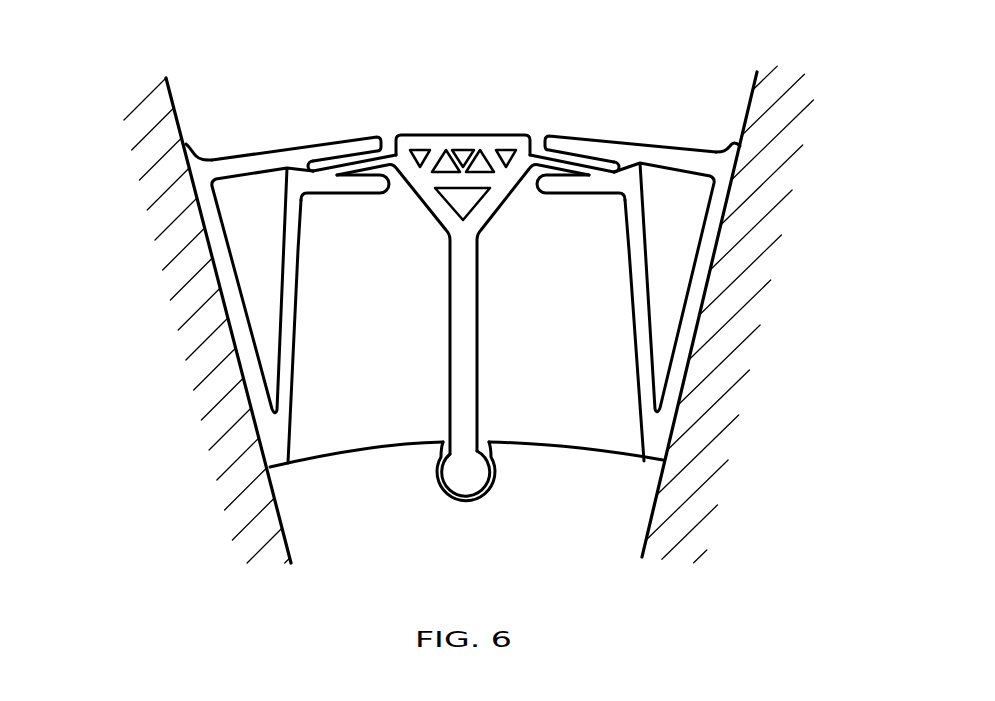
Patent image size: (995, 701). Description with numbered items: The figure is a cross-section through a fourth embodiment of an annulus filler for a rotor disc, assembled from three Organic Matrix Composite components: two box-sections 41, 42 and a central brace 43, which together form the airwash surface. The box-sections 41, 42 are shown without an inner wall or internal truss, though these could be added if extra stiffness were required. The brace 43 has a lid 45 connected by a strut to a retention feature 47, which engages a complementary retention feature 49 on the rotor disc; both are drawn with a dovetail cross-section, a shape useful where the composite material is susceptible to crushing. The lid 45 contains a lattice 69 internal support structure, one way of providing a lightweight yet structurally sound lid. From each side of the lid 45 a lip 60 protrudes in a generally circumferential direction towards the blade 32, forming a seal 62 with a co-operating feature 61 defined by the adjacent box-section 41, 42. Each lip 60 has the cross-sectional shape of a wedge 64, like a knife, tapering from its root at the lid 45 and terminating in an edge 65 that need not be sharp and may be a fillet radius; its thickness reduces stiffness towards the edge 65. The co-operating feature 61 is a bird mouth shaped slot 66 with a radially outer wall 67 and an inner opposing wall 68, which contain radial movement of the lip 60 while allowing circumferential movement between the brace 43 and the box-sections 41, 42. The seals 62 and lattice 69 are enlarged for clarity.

The blade 32 is at (150, 105).
The box-section 41 is at (294, 284).
The box-section 42 is at (640, 308).
The brace 43 is at (463, 245).
The lid 45 is at (466, 137).
The retention feature 47 is at (450, 471).
The complementary retention feature 49 is at (491, 500).
The lip 60 is at (389, 166).
The co-operating feature 61 is at (315, 147).
The seal 62 is at (390, 117).
The wedge 64 is at (366, 177).
The edge 65 is at (336, 182).
The bird mouth shaped slot 66 is at (292, 166).
The radially outer wall 67 is at (357, 141).
The radially inner wall 68 is at (356, 186).
The lattice 69 is at (480, 152).